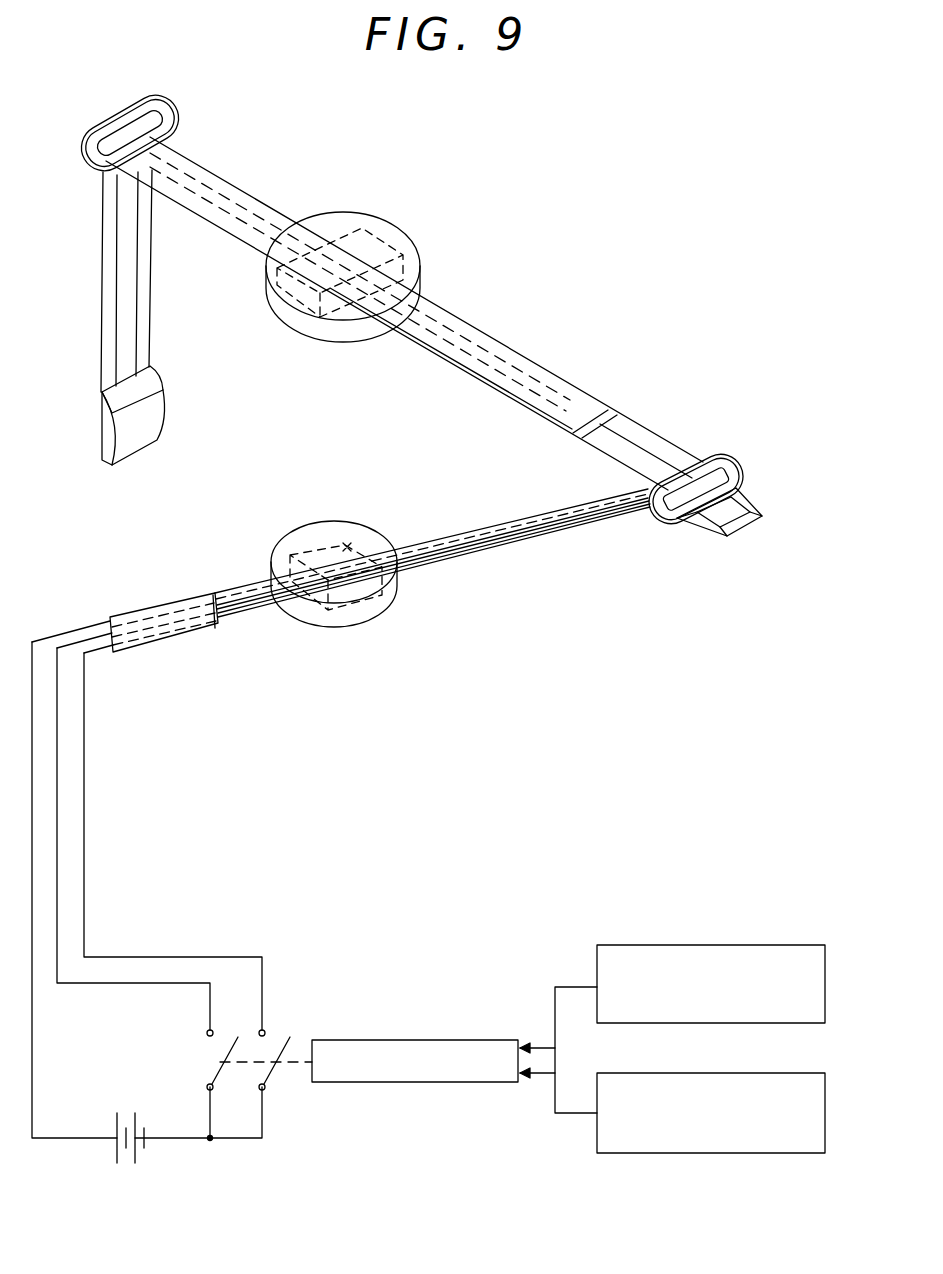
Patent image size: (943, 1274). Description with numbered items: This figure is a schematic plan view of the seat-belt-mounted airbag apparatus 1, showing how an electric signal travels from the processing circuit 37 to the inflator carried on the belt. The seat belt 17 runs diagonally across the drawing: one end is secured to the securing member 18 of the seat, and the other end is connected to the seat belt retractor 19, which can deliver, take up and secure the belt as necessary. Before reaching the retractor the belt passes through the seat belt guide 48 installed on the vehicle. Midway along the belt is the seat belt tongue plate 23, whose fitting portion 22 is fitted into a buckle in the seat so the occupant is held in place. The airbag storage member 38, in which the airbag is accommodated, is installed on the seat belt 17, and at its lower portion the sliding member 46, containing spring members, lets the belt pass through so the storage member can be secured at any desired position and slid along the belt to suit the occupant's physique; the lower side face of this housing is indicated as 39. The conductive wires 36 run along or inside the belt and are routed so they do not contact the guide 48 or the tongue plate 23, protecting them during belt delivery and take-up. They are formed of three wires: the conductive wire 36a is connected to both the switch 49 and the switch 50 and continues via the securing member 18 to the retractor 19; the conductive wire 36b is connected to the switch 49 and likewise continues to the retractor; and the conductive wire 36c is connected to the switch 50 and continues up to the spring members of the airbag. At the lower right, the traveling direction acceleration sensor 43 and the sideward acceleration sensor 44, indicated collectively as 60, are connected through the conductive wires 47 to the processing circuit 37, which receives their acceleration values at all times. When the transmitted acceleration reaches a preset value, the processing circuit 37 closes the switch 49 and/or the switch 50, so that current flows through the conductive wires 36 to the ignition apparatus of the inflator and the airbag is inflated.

The airbag apparatus 1 is at (584, 239).
The seat belt 17 is at (543, 362).
The securing member 18 is at (193, 630).
The seat belt retractor 19 is at (107, 437).
The fitting portion 22 is at (745, 522).
The seat belt tongue plate 23 is at (730, 462).
The conductive wires 36 is at (148, 1003).
The conductive wire 36a is at (140, 288).
The conductive wire 36b is at (117, 297).
The conductive wire 36c is at (73, 987).
The processing circuit 37 is at (442, 1040).
The airbag storage member 38 is at (328, 222).
The tension sensor housing side 39 is at (278, 308).
The traveling direction acceleration sensor 43 is at (815, 1010).
The sideward acceleration sensor 44 is at (817, 1095).
The sliding member 46 is at (365, 232).
The conductive wires 47 is at (557, 1030).
The seat belt guide 48 is at (158, 93).
The switch 49 is at (272, 1072).
The switch 50 is at (220, 1072).
The acceleration sensors 60 is at (843, 1023).